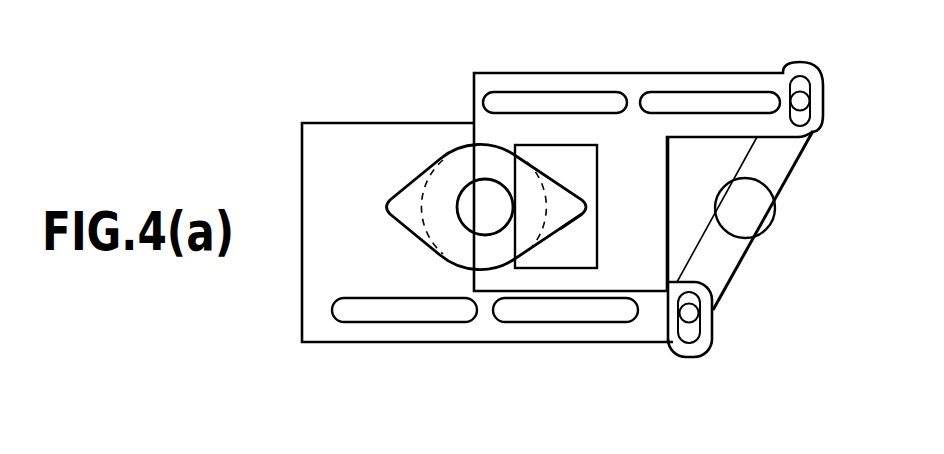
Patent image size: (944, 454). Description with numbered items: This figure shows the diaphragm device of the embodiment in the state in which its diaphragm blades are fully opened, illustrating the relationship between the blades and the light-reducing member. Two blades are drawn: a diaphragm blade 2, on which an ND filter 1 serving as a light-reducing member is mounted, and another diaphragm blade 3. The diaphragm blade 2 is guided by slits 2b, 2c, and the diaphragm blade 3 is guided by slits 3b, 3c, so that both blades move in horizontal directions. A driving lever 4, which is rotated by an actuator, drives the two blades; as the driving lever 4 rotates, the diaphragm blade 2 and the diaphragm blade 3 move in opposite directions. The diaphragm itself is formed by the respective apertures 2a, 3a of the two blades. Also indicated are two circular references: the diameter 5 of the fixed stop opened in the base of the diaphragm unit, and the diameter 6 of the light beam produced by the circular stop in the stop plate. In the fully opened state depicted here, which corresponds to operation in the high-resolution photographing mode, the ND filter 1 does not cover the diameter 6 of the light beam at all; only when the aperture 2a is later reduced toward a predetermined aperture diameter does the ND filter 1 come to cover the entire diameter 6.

The ND filter 1 is at (583, 145).
The diaphragm blade 2 is at (526, 72).
The aperture 2a is at (577, 222).
The slit 2b is at (593, 91).
The slit 2c is at (723, 91).
The diaphragm blade 3 is at (340, 343).
The aperture 3a is at (387, 193).
The slit 3b is at (420, 322).
The slit 3c is at (518, 322).
The driving lever 4 is at (772, 227).
The diameter of fixed stop 5 is at (427, 172).
The diameter of light beam 6 is at (472, 178).